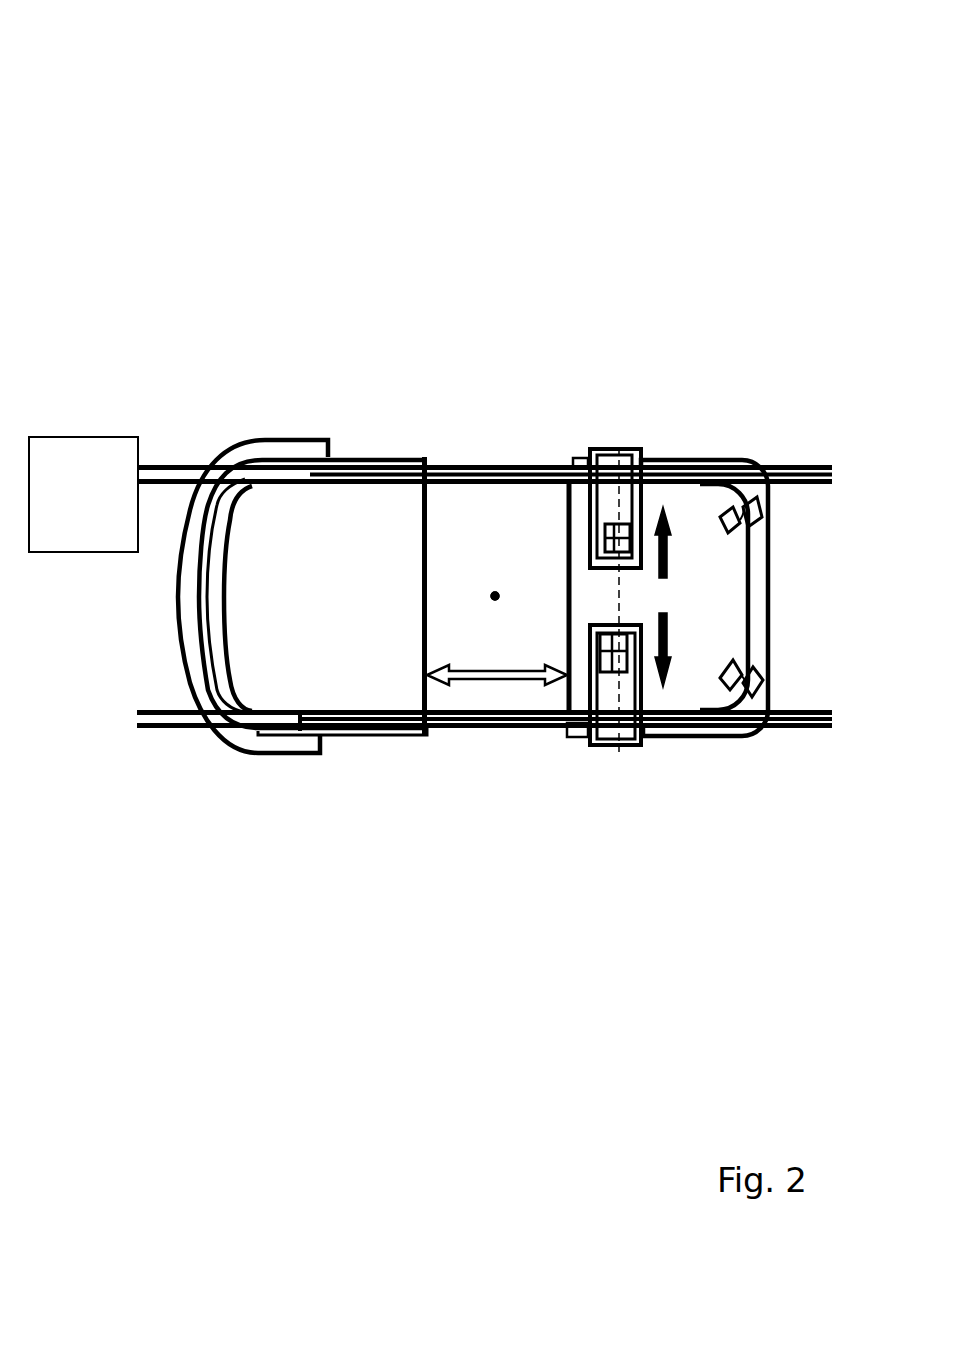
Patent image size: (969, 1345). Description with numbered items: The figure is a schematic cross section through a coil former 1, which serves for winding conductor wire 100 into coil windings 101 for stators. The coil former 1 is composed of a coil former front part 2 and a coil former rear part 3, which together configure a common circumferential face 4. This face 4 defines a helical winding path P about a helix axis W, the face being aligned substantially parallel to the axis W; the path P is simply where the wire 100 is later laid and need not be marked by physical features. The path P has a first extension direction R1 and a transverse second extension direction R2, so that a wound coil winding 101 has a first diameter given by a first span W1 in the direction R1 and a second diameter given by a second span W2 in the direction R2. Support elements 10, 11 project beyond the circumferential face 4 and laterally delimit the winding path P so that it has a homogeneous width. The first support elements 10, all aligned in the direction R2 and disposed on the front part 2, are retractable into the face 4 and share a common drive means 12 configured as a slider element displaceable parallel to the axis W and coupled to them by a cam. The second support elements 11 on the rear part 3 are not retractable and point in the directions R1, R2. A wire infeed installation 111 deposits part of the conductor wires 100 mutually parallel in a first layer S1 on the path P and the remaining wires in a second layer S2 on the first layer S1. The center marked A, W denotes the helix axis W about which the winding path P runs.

The coil former 1 is at (127, 103).
The coil former front part 2 is at (703, 503).
The coil former rear part 3 is at (280, 543).
The circumferential face 4 is at (753, 568).
The first support elements 10 is at (599, 446).
The second support elements 11 is at (185, 677).
The drive means 12 is at (603, 533).
The conductor wire 100 is at (135, 463).
The coil winding 101 is at (800, 462).
The wire infeed installation 111 is at (87, 533).
The first layer S1 is at (130, 480).
The second layer S2 is at (130, 468).
The helical winding path P is at (673, 722).
The axis / center point A is at (496, 580).
The helix axis W is at (495, 596).
The first span W1 is at (204, 700).
The second span W2 is at (375, 489).
The first extension direction R1 is at (200, 1131).
The second extension direction R2 is at (200, 1131).